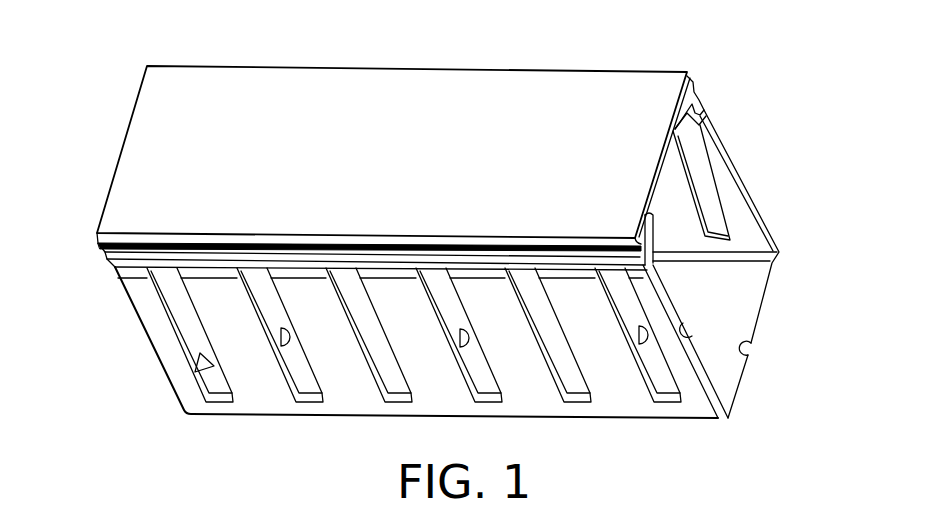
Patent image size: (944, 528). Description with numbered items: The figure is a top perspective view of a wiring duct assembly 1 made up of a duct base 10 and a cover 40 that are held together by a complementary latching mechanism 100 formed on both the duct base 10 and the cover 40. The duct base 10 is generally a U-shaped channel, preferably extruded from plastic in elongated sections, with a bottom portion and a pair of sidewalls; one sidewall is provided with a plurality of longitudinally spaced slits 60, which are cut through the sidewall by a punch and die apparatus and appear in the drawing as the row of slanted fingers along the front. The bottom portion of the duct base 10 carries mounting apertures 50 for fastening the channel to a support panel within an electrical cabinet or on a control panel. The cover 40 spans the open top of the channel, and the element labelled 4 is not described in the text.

The wiring duct assembly 1 is at (99, 297).
The cover 4 is at (268, 102).
The duct base 10 is at (170, 352).
The cover 40 is at (635, 105).
The mounting apertures 50 is at (690, 328).
The slits 60 is at (663, 377).
The latching mechanism 100 is at (712, 103).